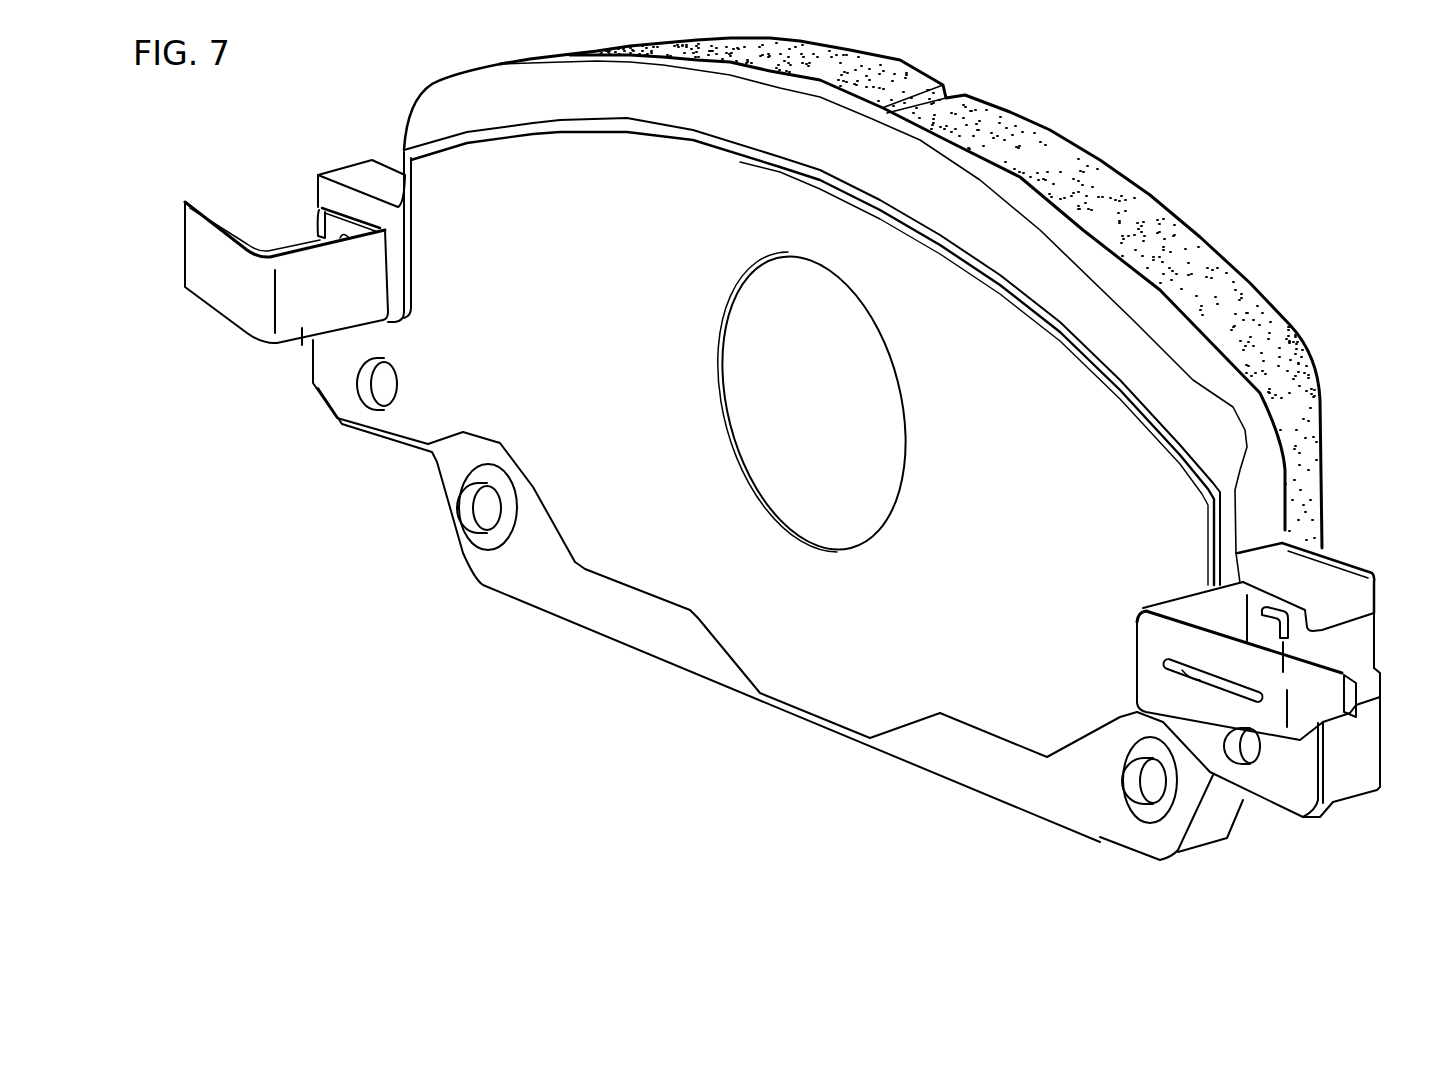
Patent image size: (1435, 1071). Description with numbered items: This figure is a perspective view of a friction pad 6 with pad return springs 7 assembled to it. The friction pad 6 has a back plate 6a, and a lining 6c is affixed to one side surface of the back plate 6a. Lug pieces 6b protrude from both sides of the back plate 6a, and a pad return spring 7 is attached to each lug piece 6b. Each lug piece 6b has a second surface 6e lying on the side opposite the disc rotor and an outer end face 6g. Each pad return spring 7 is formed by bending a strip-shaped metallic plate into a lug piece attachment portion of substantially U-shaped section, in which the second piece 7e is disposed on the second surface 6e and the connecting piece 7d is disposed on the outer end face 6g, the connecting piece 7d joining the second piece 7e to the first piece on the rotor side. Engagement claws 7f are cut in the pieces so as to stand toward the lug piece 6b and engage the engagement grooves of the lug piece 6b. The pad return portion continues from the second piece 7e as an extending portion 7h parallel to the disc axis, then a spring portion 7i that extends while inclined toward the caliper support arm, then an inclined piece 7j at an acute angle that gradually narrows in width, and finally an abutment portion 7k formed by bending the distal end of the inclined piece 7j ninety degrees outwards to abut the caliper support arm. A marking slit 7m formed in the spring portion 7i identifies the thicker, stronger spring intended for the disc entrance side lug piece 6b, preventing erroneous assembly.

The friction pad 6 is at (817, 449).
The back plate 6a is at (1020, 195).
The lug piece 6b is at (352, 156).
The lining 6c is at (1070, 165).
The second surface 6e is at (326, 190).
The outer end face 6g is at (1363, 752).
The pad return spring 7 is at (809, 492).
The connecting piece 7d is at (1365, 639).
The second piece 7e is at (326, 237).
The engagement claw 7f is at (1305, 644).
The extending portion 7h is at (302, 332).
The spring portion 7i is at (210, 233).
The inclined piece 7j is at (1300, 735).
The abutment portion 7k is at (1358, 700).
The marking slit 7m is at (1192, 665).